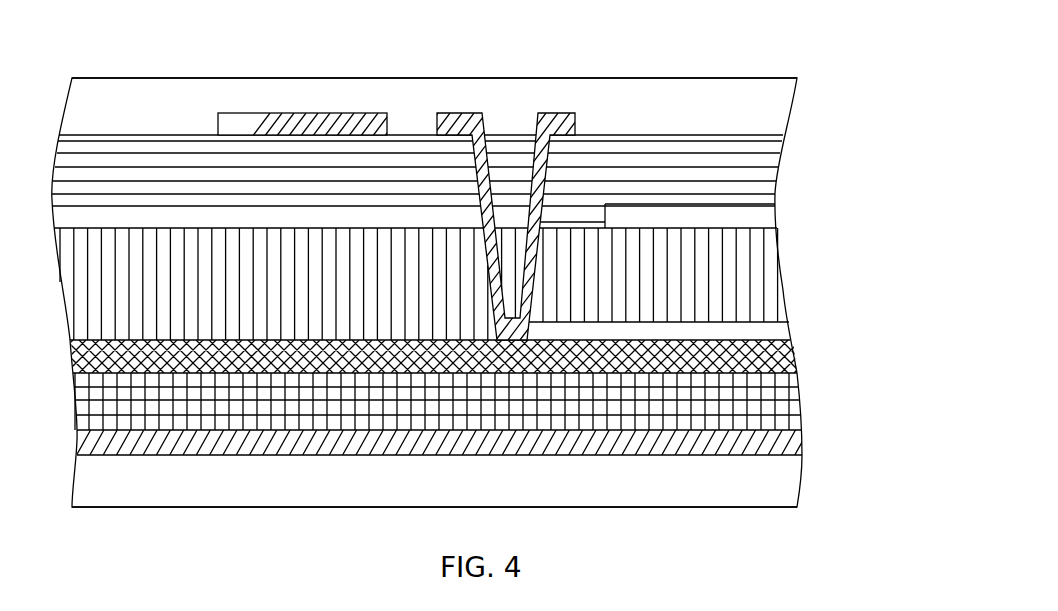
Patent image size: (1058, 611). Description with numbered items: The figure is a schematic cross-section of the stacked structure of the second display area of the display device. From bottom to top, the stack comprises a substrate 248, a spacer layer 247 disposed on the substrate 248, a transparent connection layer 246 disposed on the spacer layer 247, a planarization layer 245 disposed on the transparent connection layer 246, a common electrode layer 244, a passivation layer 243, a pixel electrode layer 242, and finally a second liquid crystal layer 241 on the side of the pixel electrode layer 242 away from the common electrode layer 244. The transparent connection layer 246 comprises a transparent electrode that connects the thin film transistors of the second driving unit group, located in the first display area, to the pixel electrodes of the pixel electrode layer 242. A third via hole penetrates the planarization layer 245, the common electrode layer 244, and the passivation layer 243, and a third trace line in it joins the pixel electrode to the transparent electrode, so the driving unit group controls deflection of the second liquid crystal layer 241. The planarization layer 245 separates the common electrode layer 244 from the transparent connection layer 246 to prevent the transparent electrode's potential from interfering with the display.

The second liquid crystal layer 241 is at (753, 103).
The pixel electrode layer 242 is at (327, 116).
The passivation layer 243 is at (763, 177).
The common electrode layer 244 is at (778, 208).
The planarization layer 245 is at (772, 265).
The transparent connection layer 246 is at (795, 330).
The spacer layer 247 is at (806, 360).
The substrate 248 is at (797, 480).